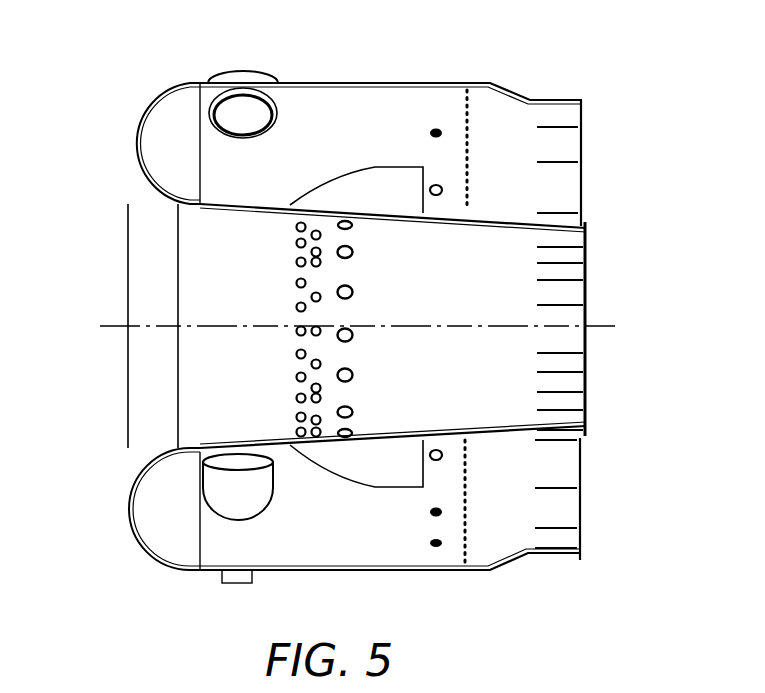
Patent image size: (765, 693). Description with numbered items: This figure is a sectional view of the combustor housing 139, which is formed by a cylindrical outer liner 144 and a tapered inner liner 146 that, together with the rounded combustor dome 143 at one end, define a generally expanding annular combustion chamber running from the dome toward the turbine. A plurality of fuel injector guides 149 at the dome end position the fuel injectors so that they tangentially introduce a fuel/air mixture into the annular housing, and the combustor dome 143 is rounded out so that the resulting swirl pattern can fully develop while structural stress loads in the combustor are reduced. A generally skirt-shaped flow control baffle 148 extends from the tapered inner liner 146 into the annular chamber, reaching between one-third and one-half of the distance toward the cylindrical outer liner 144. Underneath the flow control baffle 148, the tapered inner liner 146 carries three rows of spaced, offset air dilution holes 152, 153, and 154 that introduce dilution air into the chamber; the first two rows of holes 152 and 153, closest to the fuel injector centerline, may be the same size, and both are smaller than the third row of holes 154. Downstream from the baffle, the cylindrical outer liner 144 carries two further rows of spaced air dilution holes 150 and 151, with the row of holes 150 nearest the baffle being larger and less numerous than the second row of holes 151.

The combustor housing 139 is at (538, 88).
The combustor dome 143 is at (132, 128).
The cylindrical outer liner 144 is at (345, 82).
The tapered inner liner 146 is at (468, 430).
The flow control baffle 148 is at (378, 487).
The fuel injector guide 149 is at (243, 73).
The air dilution holes 150 is at (440, 108).
The air dilution holes 151 is at (470, 178).
The air dilution holes 152 is at (297, 282).
The air dilution holes 153 is at (322, 296).
The air dilution holes 154 is at (355, 292).